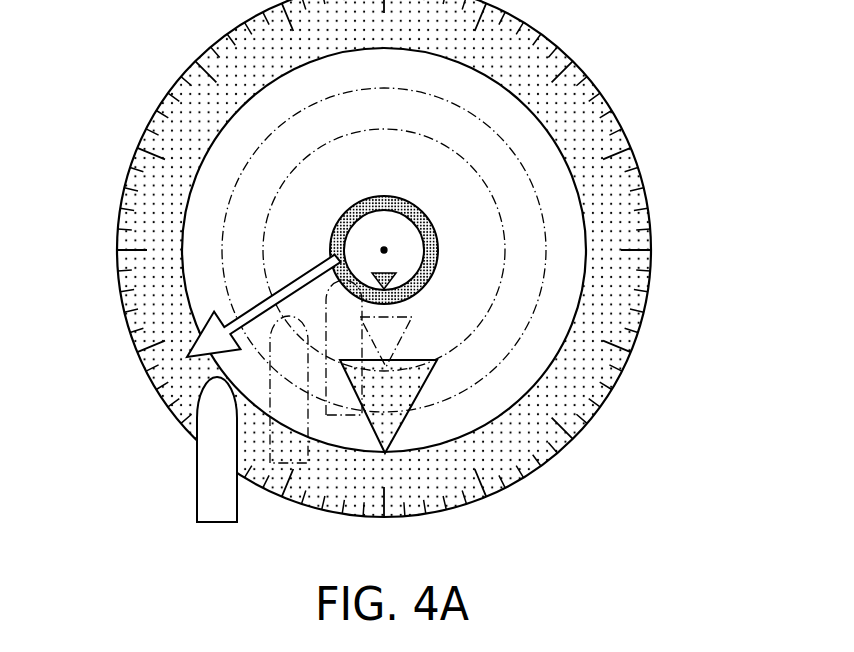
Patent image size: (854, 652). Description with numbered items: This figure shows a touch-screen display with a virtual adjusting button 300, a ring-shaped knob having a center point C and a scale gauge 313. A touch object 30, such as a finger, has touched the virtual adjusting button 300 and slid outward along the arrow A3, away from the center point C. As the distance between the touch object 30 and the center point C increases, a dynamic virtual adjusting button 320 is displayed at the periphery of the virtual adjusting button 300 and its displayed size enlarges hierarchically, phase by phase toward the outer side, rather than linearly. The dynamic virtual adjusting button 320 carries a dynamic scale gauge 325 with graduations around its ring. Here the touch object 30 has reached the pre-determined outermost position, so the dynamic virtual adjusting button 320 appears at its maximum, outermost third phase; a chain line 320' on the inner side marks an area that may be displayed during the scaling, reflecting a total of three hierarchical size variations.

The dynamic virtual adjusting button 320 is at (424, 258).
The chain line 320' is at (440, 225).
The dynamic scale gauge 325 is at (382, 517).
The virtual adjusting button 300 is at (370, 197).
The scale gauge 313 is at (387, 305).
The center point C is at (384, 250).
The arrow A3 is at (226, 327).
The touch object 30 is at (213, 500).